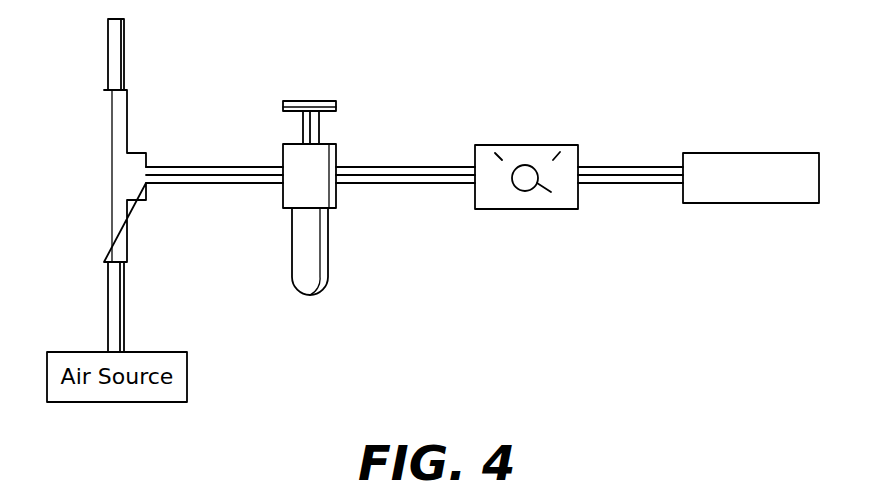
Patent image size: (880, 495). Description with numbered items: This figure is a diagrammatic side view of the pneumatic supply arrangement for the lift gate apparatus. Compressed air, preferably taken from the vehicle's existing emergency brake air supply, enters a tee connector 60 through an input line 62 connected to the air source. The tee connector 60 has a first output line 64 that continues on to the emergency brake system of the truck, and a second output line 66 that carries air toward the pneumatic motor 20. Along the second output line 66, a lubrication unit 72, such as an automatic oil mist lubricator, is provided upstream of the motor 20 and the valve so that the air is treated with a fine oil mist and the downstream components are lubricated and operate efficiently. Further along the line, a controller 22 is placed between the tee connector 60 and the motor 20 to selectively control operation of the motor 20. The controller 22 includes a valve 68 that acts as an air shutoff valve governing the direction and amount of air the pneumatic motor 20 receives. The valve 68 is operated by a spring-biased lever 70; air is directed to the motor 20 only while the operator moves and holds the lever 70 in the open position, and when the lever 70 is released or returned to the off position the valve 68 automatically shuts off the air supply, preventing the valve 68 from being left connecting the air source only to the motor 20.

The pneumatic motor 20 is at (722, 153).
The controller 22 is at (556, 137).
The tee connector 60 is at (137, 152).
The input line 62 is at (125, 295).
The first output line 64 is at (123, 55).
The second output line 66 is at (173, 183).
The valve 68 is at (531, 145).
The spring-biased lever 70 is at (539, 188).
The lubrication unit 72 is at (332, 208).